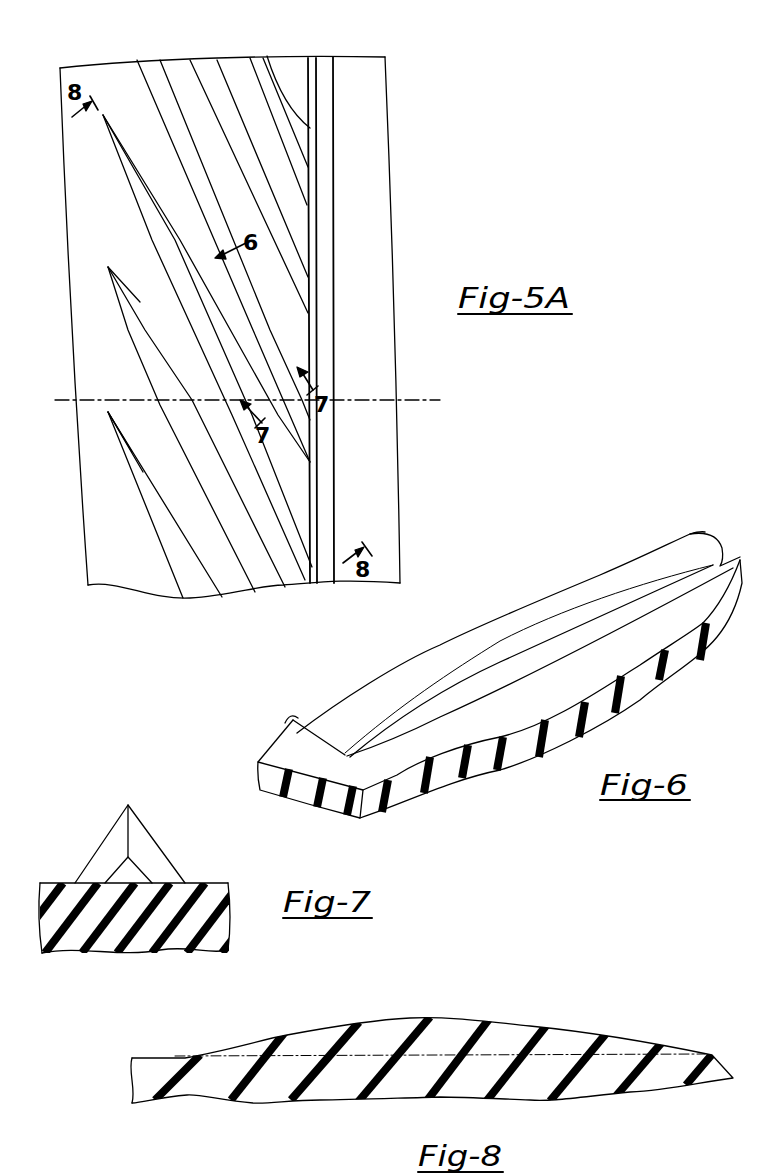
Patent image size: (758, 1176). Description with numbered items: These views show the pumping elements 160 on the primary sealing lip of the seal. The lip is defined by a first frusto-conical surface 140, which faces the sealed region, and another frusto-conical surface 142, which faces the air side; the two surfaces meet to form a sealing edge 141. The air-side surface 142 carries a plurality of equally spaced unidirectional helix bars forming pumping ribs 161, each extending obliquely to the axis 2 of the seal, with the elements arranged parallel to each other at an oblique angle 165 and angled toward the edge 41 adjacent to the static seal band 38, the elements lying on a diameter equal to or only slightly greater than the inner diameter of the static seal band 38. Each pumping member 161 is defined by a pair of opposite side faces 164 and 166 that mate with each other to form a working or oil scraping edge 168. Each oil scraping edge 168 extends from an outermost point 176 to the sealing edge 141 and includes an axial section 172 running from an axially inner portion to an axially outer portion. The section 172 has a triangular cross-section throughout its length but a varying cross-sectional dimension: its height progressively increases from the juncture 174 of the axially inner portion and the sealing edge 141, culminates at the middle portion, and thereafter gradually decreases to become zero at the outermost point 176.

In FIG. 5A, the axis 2 is at (387, 398).
In FIG. 5A, the static seal band 38 is at (370, 147).
In FIG. 6, the edge 41 is at (285, 724).
In FIG. 5A, the first frusto-conical surface 140 is at (377, 80).
In FIG. 6, the first frusto-conical surface 140 is at (380, 777).
In FIG. 5A, the sealing edge 141 is at (308, 58).
In FIG. 5A, the frusto-conical surface 142 is at (300, 487).
In FIG. 6, the frusto-conical surface 142 is at (328, 737).
In FIG. 7, the frusto-conical surface 142 is at (42, 955).
In FIG. 5A, the pumping elements 160 is at (312, 128).
In FIG. 6, the pumping elements 160 is at (700, 533).
In FIG. 5A, the pumping ribs 161 is at (80, 512).
In FIG. 5A, the side face 164 is at (145, 205).
In FIG. 6, the side face 164 is at (417, 720).
In FIG. 7, the side face 164 is at (98, 848).
In FIG. 5A, the oblique angle 165 is at (128, 318).
In FIG. 7, the oblique angle 165 is at (122, 803).
In FIG. 5A, the side face 166 is at (167, 197).
In FIG. 6, the side face 166 is at (402, 695).
In FIG. 7, the side face 166 is at (143, 818).
In FIG. 5A, the oil scraping edge 168 is at (260, 82).
In FIG. 6, the oil scraping edge 168 is at (445, 680).
In FIG. 7, the oil scraping edge 168 is at (128, 805).
In FIG. 5A, the axial section 172 is at (287, 247).
In FIG. 6, the axial section 172 is at (542, 617).
In FIG. 8, the axial section 172 is at (407, 1020).
In FIG. 5A, the juncture 174 is at (335, 277).
In FIG. 8, the juncture 174 is at (697, 1050).
In FIG. 5A, the outermost point 176 is at (100, 113).
In FIG. 6, the outermost point 176 is at (718, 560).
In FIG. 8, the outermost point 176 is at (185, 1057).